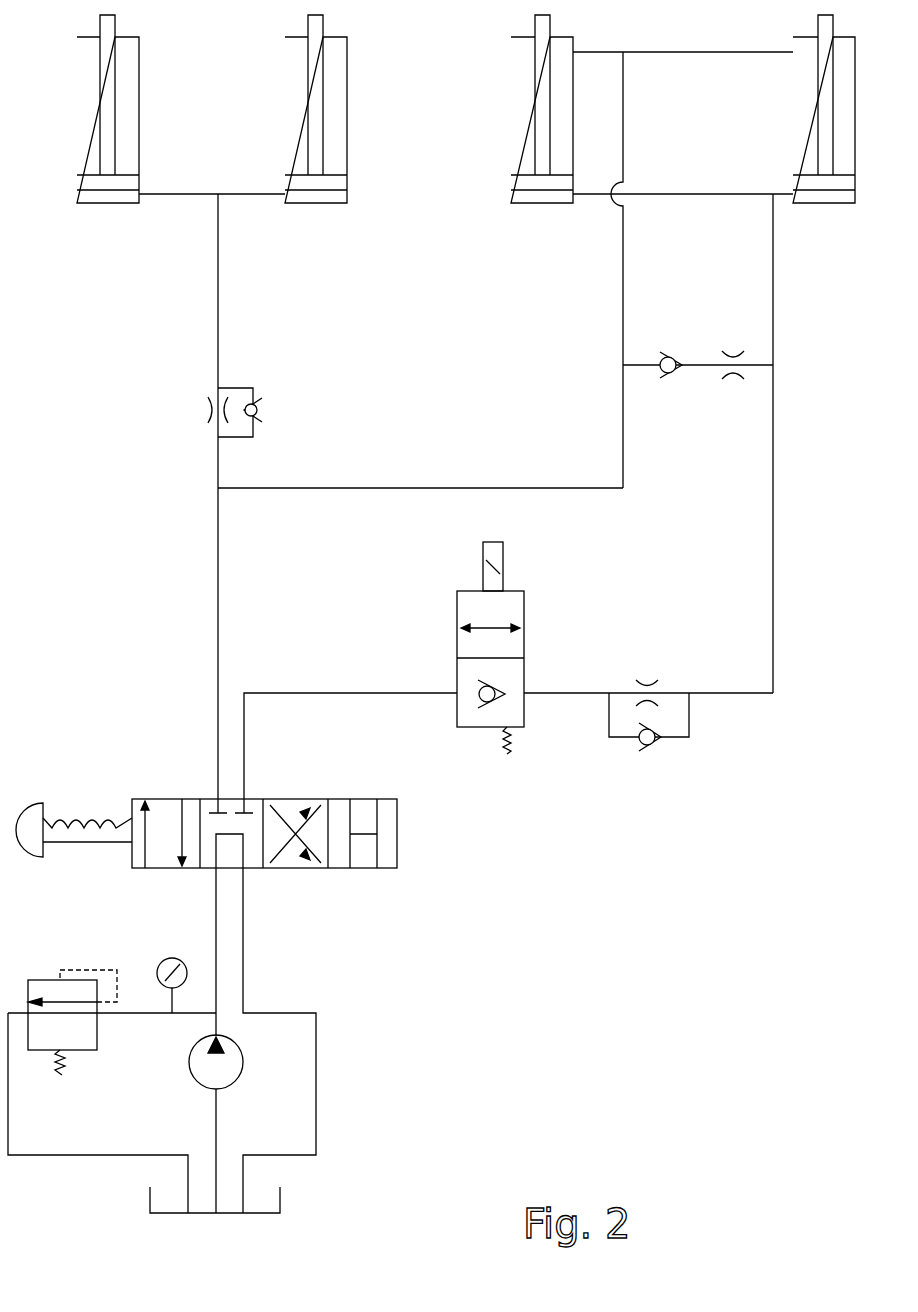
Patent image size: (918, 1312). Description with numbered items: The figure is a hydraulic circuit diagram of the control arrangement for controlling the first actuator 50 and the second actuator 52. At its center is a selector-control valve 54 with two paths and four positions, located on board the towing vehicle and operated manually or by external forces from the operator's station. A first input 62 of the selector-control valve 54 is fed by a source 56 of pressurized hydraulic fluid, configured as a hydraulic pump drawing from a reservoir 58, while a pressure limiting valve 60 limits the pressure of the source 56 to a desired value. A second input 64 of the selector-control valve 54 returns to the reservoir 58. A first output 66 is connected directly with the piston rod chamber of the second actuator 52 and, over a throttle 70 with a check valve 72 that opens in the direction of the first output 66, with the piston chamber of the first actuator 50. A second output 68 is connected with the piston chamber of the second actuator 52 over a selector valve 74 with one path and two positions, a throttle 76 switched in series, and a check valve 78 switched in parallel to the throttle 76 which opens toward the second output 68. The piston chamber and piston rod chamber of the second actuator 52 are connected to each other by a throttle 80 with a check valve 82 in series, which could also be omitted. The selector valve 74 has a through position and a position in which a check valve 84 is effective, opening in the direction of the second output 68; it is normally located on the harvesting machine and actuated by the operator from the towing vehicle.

The first actuator 50 is at (273, 102).
The second actuator 52 is at (777, 126).
The selector-control valve 54 is at (428, 858).
The source of pressurized hydraulic fluid 56 is at (243, 1062).
The reservoir 58 is at (282, 1200).
The pressure limiting valve 60 is at (97, 1033).
The first input 62 is at (216, 932).
The second input 64 is at (243, 976).
The first output 66 is at (216, 770).
The second output 68 is at (244, 770).
The throttle 70 is at (213, 423).
The check valve 72 is at (262, 400).
The selector valve 74 is at (524, 623).
The throttle 76 is at (645, 686).
The check valve 78 is at (645, 750).
The throttle 80 is at (733, 380).
The check valve 82 is at (676, 380).
The check valve 84 is at (482, 700).